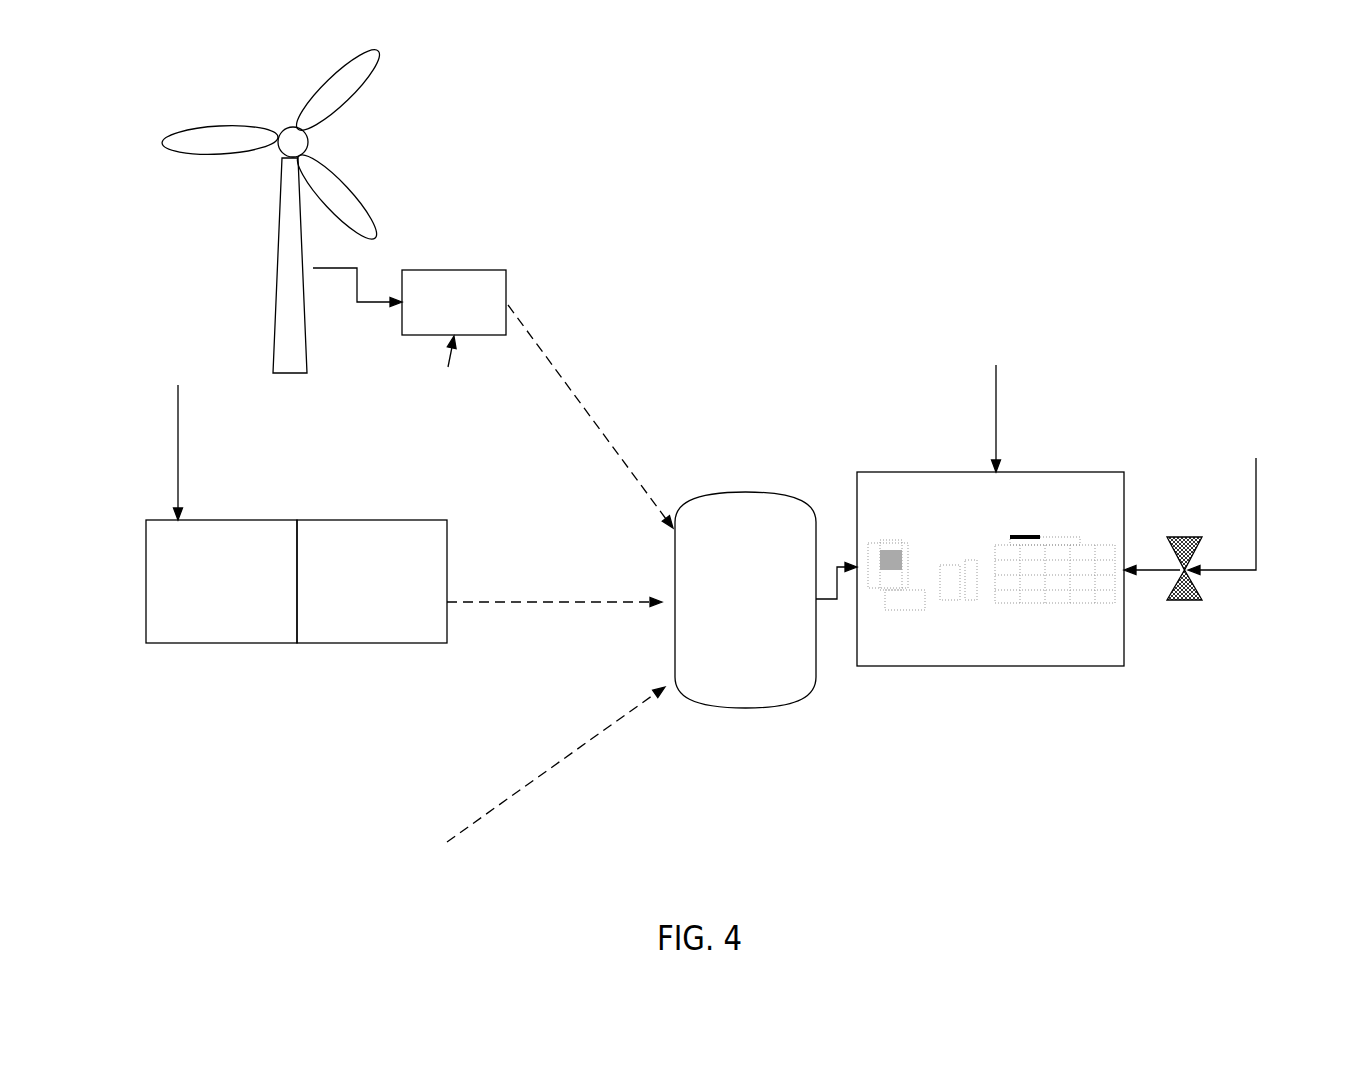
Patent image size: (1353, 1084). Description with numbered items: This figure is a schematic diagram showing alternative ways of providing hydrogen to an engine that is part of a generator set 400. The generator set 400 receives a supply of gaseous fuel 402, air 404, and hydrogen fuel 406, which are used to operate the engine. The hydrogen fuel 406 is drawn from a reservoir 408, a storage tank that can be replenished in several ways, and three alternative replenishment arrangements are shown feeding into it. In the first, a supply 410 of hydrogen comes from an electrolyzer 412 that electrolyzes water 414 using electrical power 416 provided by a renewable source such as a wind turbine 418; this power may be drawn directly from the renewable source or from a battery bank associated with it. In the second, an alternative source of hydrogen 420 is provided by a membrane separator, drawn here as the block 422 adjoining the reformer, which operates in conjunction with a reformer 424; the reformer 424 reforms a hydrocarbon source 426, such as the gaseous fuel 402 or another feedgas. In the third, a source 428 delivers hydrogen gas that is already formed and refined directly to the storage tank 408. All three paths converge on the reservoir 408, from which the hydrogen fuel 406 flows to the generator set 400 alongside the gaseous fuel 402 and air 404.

The generator set 400 is at (1048, 468).
The gaseous fuel 402 is at (1253, 507).
The air 404 is at (998, 393).
The hydrogen fuel 406 is at (832, 603).
The reservoir 408 is at (742, 490).
The supply 410 is at (602, 430).
The electrolyzer 412 is at (503, 282).
The water 414 is at (448, 367).
The electrical power 416 is at (343, 267).
The wind turbine 418 is at (328, 163).
The alternative source of hydrogen 420 is at (485, 597).
The reformer unit 422 is at (355, 518).
The reformer 424 is at (213, 518).
The hydrocarbon source 426 is at (180, 470).
The third alternative source 428 is at (587, 743).